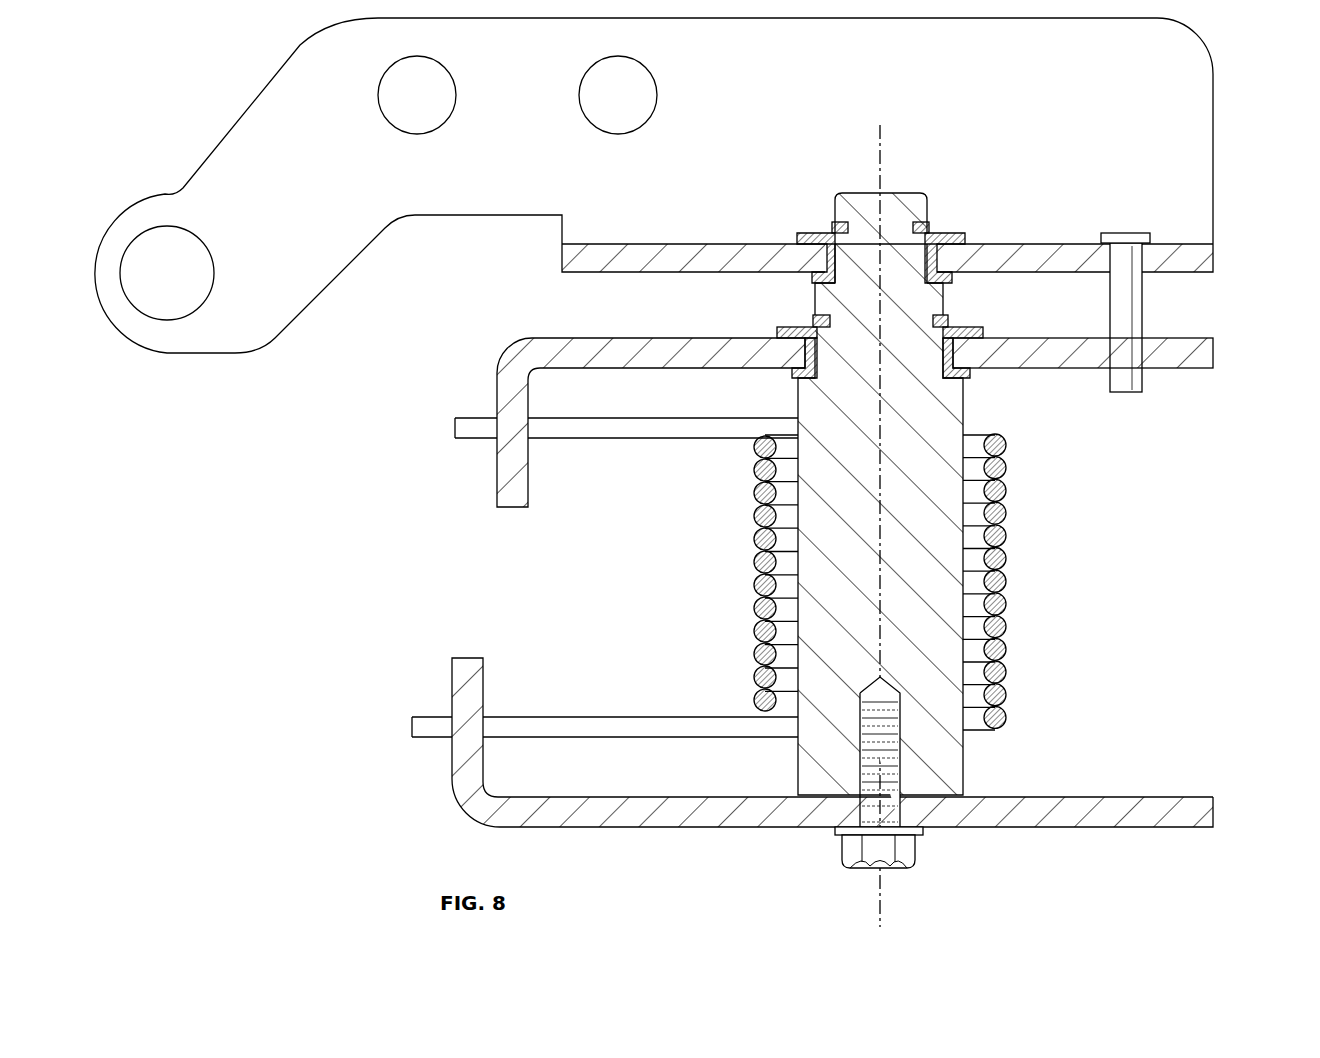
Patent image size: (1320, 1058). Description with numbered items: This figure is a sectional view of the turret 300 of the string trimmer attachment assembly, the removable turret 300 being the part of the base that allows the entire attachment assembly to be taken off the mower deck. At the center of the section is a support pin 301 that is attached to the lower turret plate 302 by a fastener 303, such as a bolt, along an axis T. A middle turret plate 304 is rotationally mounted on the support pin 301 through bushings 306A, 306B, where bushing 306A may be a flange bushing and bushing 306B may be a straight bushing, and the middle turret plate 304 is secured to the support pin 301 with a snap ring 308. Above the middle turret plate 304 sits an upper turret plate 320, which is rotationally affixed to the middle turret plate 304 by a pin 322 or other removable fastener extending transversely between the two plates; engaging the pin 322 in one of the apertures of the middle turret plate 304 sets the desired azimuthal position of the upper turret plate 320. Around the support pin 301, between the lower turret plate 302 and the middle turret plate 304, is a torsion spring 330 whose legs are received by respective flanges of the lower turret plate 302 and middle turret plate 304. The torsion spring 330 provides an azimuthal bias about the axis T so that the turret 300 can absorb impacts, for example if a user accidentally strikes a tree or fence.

The turret 300 is at (396, 435).
The support pin 301 is at (812, 522).
The lower turret plate 302 is at (1185, 808).
The fastener 303 is at (832, 862).
The middle turret plate 304 is at (1208, 350).
The bushing 306A is at (790, 372).
The bushing 306B is at (780, 332).
The snap ring 308 is at (813, 320).
The upper turret plate 320 is at (1207, 258).
The pin 322 is at (1130, 232).
The torsion spring 330 is at (1006, 650).
The axis T is at (881, 140).